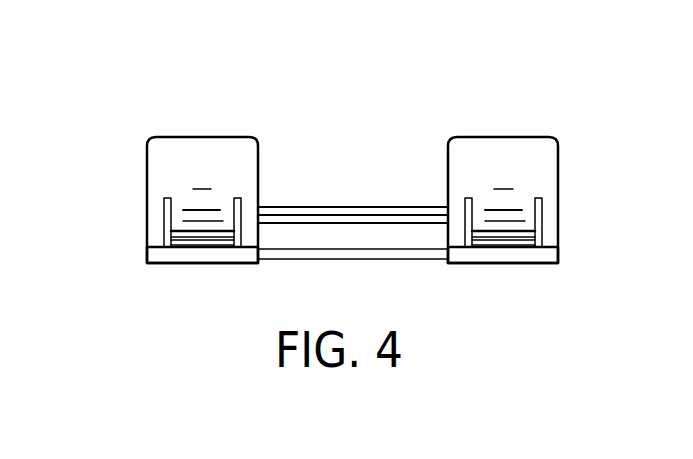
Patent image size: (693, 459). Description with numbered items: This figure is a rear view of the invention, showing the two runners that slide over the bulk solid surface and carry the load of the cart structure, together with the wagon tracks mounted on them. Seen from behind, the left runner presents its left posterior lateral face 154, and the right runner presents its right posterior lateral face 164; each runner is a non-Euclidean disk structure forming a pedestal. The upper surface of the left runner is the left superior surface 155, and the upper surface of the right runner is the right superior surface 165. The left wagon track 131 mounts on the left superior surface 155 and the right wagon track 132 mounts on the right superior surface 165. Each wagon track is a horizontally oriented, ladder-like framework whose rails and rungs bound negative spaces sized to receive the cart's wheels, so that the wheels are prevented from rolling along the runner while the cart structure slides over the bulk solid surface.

The left wagon track 131 is at (167, 217).
The right wagon track 132 is at (540, 207).
The left posterior lateral face 154 is at (190, 257).
The left superior surface 155 is at (208, 160).
The right posterior lateral face 164 is at (515, 255).
The right superior surface 165 is at (500, 160).